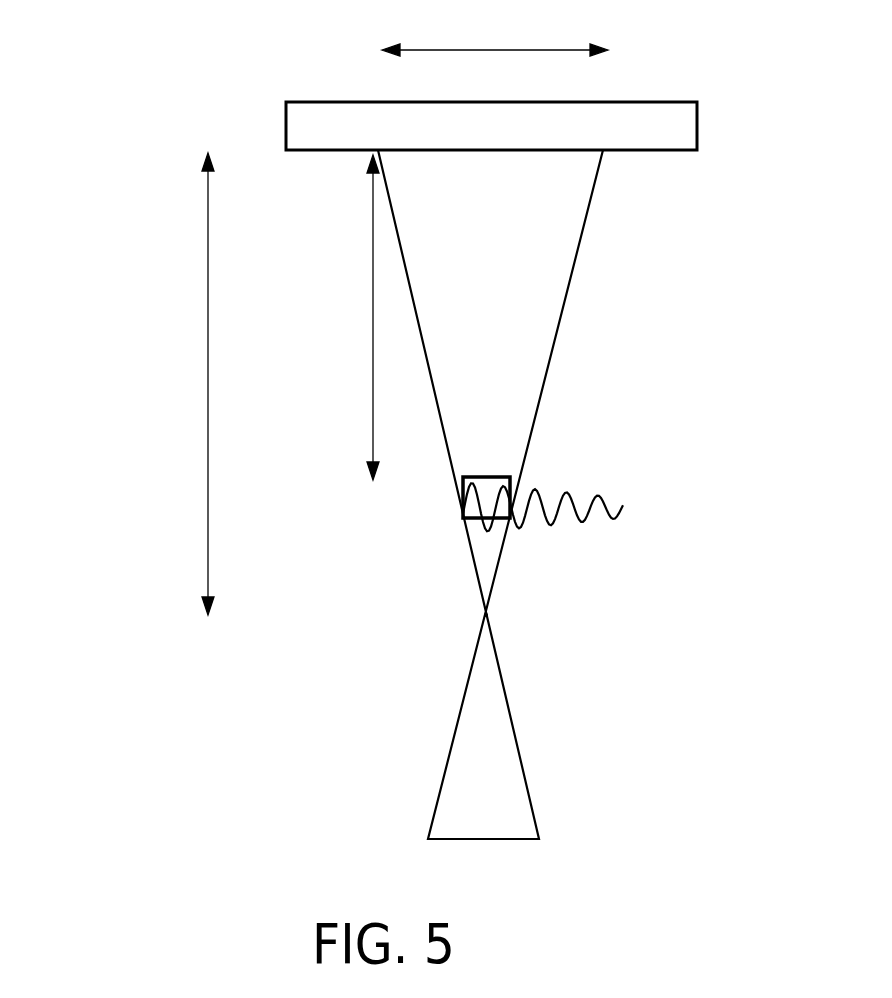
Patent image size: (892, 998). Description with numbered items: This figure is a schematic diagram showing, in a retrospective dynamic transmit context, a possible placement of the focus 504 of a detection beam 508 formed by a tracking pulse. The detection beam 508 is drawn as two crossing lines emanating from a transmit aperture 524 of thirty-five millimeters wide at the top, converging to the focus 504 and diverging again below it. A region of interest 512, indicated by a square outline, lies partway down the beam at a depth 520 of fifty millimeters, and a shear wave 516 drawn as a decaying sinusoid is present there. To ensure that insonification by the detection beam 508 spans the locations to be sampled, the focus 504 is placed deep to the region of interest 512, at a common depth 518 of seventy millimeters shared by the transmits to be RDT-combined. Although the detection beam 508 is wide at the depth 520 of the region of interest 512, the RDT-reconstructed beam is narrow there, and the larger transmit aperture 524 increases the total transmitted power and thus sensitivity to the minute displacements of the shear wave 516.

The focus 504 is at (505, 617).
The detection beam 508 is at (580, 309).
The region of interest 512 is at (521, 476).
The shear wave 516 is at (592, 489).
The common depth 518 is at (208, 505).
The depth of the ROI 520 is at (373, 367).
The transmit aperture 524 is at (507, 52).